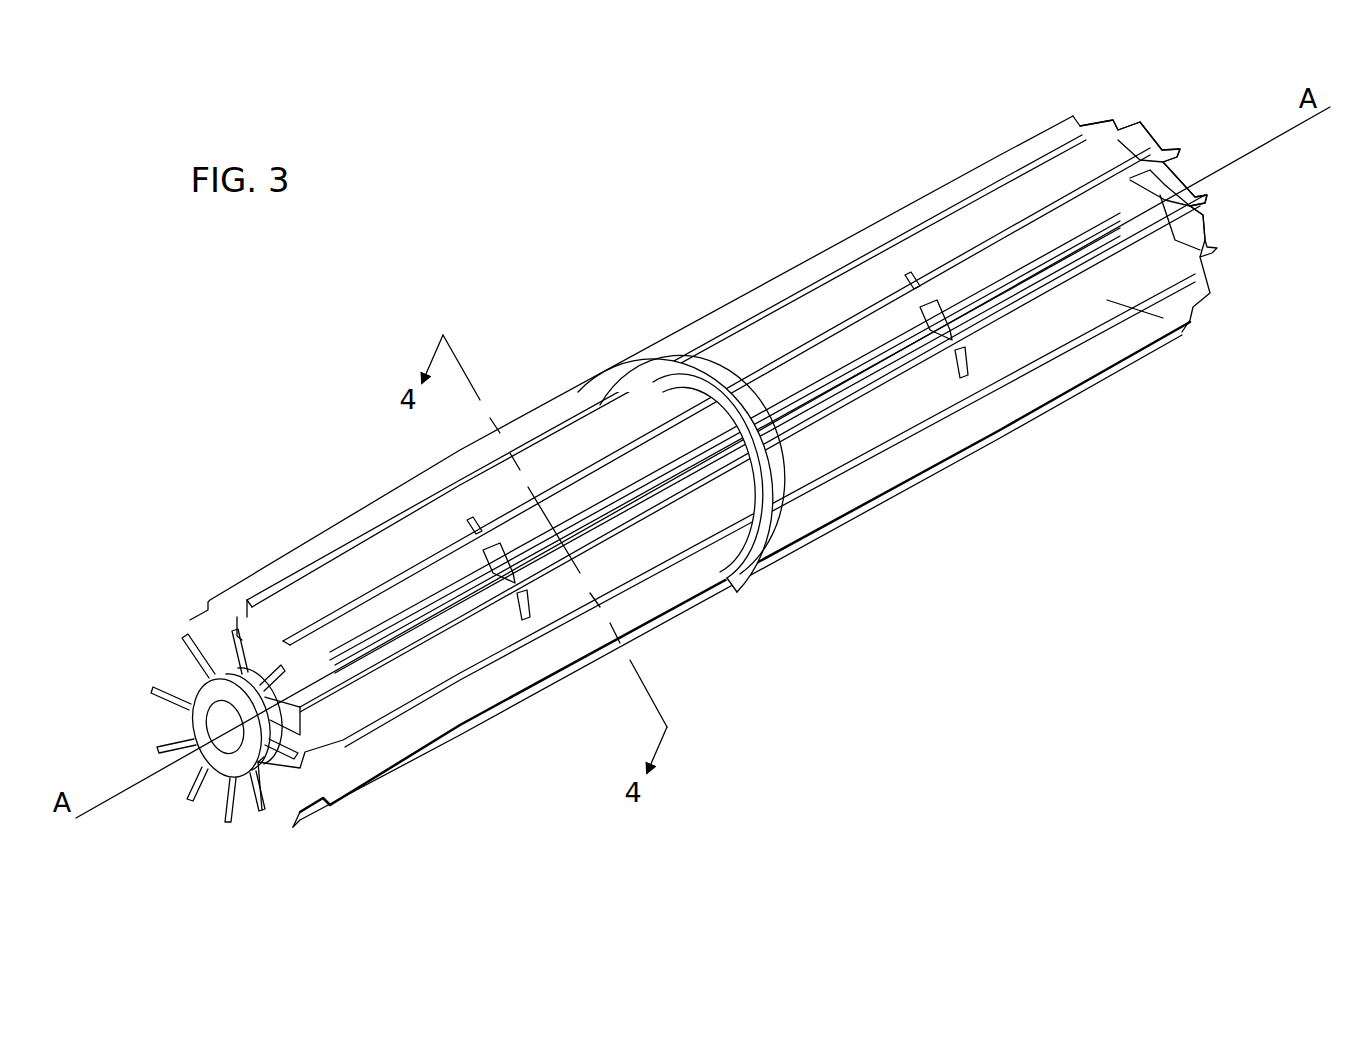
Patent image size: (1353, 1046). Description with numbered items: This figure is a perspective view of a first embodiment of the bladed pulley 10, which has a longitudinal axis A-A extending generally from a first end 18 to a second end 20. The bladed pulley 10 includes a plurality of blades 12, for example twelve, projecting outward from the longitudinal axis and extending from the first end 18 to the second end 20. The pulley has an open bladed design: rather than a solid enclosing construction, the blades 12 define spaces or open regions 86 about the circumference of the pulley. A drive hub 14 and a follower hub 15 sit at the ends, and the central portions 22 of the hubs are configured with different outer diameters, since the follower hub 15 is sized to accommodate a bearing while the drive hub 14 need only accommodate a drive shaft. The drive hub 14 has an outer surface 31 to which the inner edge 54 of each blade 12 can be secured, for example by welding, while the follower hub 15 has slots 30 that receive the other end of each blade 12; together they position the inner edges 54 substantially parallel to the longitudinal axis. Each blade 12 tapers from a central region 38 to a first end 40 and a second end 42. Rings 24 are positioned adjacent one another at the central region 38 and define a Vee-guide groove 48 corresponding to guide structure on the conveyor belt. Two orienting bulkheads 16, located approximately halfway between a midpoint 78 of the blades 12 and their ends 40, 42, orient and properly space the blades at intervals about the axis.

The bladed pulley 10 is at (718, 198).
The blades 12 is at (163, 690).
The drive hub 14 is at (200, 705).
The follower hub 15 is at (1205, 222).
The orienting bulkheads 16 is at (513, 603).
The first end 18 is at (222, 772).
The second end 20 is at (1152, 142).
The central portions 22 is at (277, 727).
The rings 24 is at (748, 592).
The slots 30 is at (1140, 178).
The outer surface 31 is at (267, 700).
The central region 38 is at (578, 392).
The first end of the blade 40 is at (237, 617).
The second end of the blade 42 is at (1100, 145).
The Vee-guide groove 48 is at (637, 357).
The inner edges 54 is at (247, 617).
The midpoint 78 is at (771, 608).
The open regions 86 is at (907, 210).